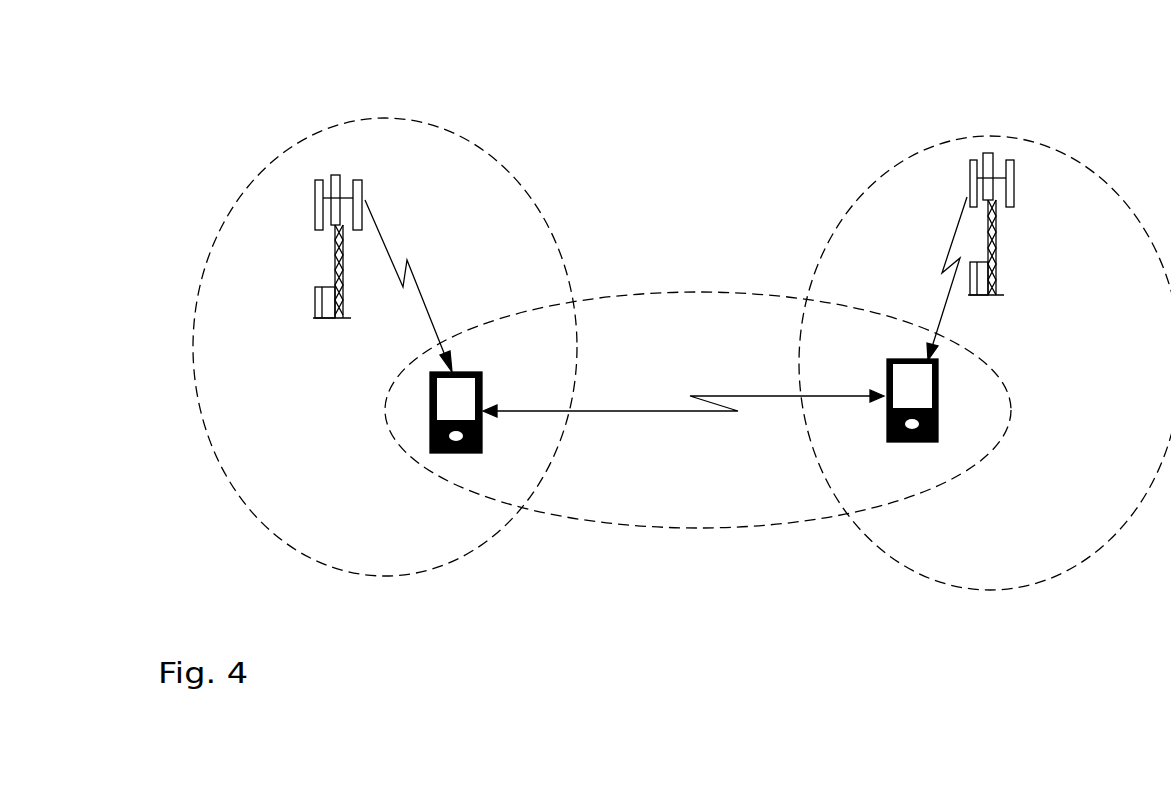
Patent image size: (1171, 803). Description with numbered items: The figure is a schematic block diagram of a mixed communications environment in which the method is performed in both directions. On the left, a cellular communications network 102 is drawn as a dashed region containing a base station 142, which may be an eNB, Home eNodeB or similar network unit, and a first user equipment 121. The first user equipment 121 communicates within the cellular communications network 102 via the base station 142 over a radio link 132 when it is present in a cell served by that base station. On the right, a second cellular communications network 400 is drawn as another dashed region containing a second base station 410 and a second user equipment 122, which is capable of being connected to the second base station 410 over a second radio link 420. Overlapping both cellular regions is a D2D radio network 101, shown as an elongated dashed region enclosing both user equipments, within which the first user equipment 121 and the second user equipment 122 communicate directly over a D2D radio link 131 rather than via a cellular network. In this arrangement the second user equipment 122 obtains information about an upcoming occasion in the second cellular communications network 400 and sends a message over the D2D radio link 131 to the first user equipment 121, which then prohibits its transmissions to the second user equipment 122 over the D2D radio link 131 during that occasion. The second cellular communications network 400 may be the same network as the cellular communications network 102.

The cellular communications network 102 is at (443, 125).
The base station 142 is at (315, 215).
The radio link 132 is at (380, 226).
The D2D radio network 101 is at (597, 298).
The D2D radio link 131 is at (655, 410).
The first user equipment 121 is at (430, 418).
The second user equipment 122 is at (943, 398).
The second cellular communications network 400 is at (990, 132).
The second base station 410 is at (970, 177).
The second radio link 420 is at (940, 327).